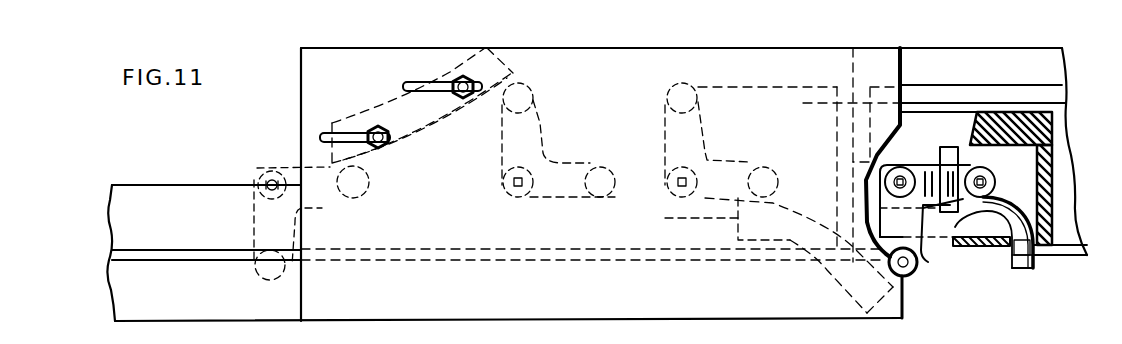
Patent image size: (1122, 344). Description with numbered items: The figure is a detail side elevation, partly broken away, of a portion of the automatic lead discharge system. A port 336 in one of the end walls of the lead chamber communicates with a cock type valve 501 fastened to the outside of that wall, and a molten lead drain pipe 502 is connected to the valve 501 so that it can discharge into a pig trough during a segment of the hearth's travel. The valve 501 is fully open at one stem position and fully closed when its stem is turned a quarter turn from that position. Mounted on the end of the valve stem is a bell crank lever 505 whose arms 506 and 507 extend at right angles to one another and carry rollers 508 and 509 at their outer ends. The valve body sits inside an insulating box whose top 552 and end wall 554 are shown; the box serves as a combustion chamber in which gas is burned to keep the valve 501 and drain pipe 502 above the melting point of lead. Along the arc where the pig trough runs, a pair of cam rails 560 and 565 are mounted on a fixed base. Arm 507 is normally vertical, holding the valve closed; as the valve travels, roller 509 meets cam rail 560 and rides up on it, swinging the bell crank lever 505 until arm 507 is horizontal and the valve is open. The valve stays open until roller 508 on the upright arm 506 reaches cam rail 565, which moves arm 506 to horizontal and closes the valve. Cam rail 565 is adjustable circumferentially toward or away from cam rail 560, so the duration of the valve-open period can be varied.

The port 336 is at (847, 170).
The cock type valve 501 is at (902, 156).
The molten lead drain pipe 502 is at (1028, 268).
The bell crank lever 505 is at (940, 177).
The arm 506 is at (662, 127).
The arm 507 is at (253, 222).
The roller 508 is at (1017, 164).
The roller 509 is at (913, 278).
The top 552 is at (1033, 111).
The end wall 554 is at (1052, 156).
The cam rail 560 is at (812, 273).
The cam rail 565 is at (415, 135).